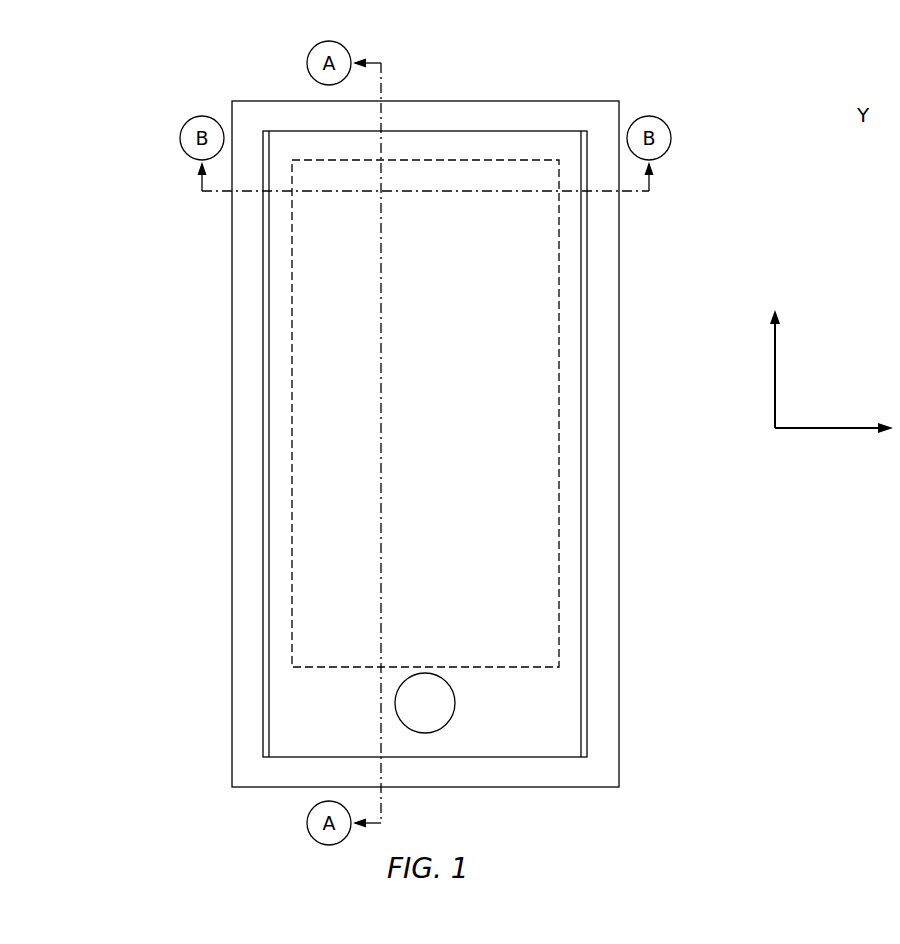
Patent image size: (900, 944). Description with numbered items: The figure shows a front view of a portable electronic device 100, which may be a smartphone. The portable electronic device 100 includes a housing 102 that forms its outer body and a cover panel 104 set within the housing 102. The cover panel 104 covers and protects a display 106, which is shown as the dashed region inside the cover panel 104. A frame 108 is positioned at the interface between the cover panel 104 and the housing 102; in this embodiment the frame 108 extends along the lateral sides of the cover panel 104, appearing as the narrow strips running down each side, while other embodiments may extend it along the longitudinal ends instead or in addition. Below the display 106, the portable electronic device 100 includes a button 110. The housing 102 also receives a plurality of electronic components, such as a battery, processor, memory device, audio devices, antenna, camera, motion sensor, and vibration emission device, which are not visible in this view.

The portable electronic device 100 is at (347, 406).
The housing 102 is at (362, 444).
The cover panel 104 is at (343, 444).
The display 106 is at (332, 413).
The frame 108 is at (346, 444).
The button 110 is at (470, 705).